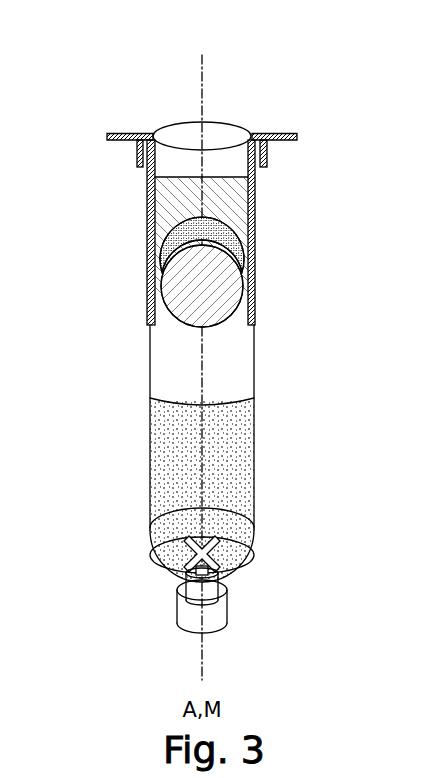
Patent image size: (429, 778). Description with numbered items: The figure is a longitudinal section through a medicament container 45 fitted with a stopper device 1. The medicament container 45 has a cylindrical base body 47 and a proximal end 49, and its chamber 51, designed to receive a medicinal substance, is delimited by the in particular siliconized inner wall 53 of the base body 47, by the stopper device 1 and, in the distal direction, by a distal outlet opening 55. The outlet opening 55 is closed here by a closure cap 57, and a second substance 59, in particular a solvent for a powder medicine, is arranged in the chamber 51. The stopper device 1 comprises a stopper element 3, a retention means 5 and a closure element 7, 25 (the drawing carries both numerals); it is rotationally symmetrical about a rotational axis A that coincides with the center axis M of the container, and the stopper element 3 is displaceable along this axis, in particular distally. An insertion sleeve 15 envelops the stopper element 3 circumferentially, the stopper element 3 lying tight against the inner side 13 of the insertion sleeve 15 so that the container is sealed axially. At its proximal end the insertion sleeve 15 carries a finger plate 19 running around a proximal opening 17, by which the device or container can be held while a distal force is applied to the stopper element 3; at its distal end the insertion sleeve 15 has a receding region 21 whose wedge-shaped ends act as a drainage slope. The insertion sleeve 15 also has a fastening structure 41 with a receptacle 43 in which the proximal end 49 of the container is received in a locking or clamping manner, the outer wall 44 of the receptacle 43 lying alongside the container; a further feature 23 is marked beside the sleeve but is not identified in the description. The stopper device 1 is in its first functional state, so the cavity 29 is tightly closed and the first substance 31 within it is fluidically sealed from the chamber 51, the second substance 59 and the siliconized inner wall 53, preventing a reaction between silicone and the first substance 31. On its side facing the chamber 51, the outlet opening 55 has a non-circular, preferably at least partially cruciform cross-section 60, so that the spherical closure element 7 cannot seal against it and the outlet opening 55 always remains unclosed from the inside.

The stopper device 1 is at (218, 350).
The stopper element 3 is at (218, 359).
The retention means 5 is at (218, 359).
The closure element 7 is at (257, 279).
The inner side of the insertion sleeve 13 is at (157, 163).
The insertion sleeve 15 is at (147, 226).
The proximal opening 17 is at (195, 118).
The finger plate 19 is at (202, 141).
The receding region 21 is at (268, 290).
The plug region 23 is at (130, 268).
The ball element 25 is at (257, 279).
The cavity 29 is at (232, 222).
The first substance 31 is at (258, 244).
The fastening structure 41 is at (133, 152).
The receptacle 43 is at (147, 173).
The outer wall of the receptacle 44 is at (268, 160).
The medicament container 45 is at (201, 407).
The cylindrical base body 47 is at (254, 389).
The proximal end 49 is at (210, 135).
The chamber 51 is at (166, 338).
The inner wall 53 is at (158, 372).
The distal outlet opening 55 is at (156, 563).
The closure cap 57 is at (228, 624).
The second substance 59 is at (247, 485).
The non-circular cross-section 60 is at (184, 541).